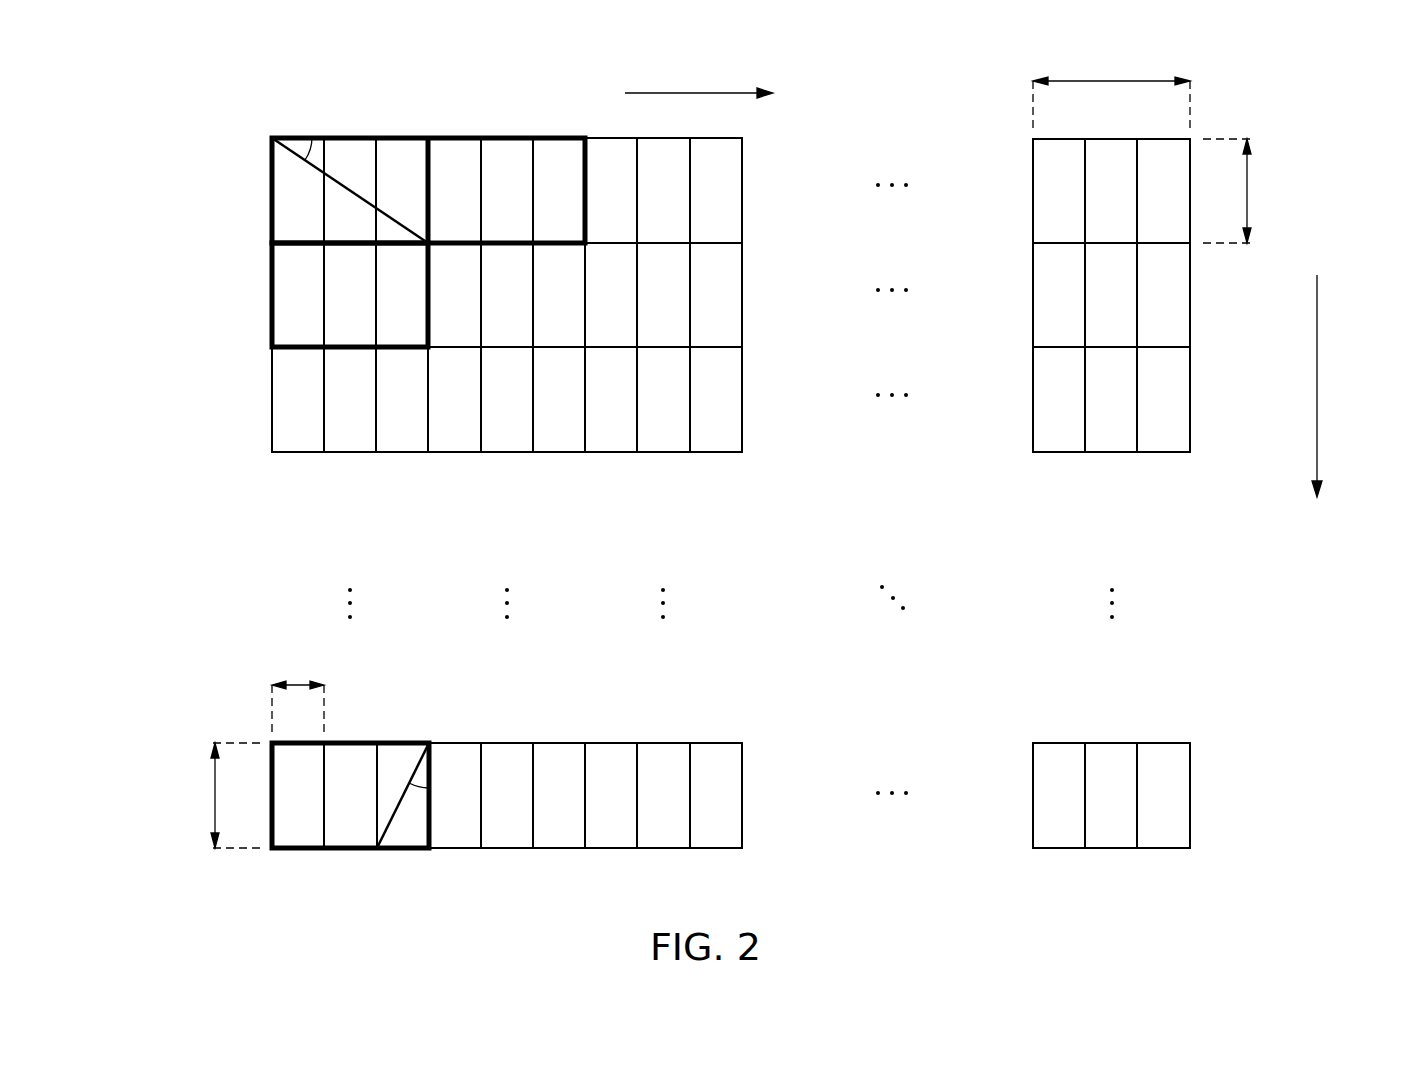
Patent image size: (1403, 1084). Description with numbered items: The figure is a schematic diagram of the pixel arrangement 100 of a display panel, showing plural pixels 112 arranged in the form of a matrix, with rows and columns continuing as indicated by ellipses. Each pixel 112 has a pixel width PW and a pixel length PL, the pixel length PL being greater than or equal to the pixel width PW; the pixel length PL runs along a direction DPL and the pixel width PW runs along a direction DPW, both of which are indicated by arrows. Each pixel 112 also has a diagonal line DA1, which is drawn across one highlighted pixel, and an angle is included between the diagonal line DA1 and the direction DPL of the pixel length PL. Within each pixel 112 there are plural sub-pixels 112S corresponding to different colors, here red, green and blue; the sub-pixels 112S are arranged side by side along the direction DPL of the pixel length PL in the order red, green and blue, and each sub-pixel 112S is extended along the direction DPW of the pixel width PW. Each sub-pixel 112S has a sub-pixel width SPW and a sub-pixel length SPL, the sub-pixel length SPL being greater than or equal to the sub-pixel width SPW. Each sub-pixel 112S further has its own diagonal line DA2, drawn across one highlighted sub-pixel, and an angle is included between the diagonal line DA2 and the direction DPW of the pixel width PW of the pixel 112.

The display device pixel array 100 is at (150, 105).
The pixel 112 is at (507, 137).
The sub-pixel 112S is at (298, 832).
The diagonal line DA1 is at (357, 190).
The diagonal line DA2 is at (397, 790).
The pixel length PL is at (1111, 87).
The pixel width PW is at (1249, 191).
The sub-pixel width SPW is at (296, 692).
The sub-pixel length SPL is at (211, 795).
The direction of the pixel length DPL is at (699, 78).
The direction of the pixel width DPW is at (1349, 386).